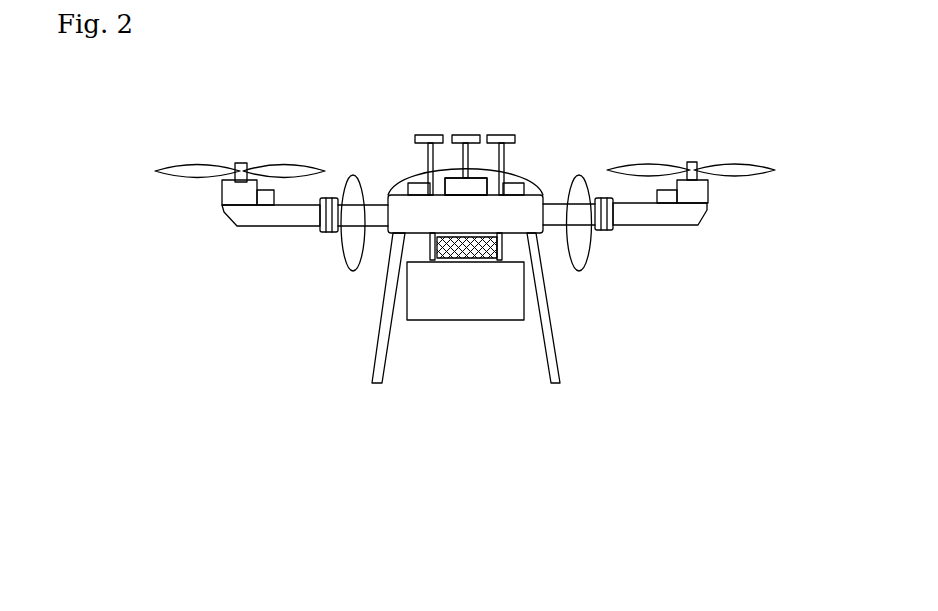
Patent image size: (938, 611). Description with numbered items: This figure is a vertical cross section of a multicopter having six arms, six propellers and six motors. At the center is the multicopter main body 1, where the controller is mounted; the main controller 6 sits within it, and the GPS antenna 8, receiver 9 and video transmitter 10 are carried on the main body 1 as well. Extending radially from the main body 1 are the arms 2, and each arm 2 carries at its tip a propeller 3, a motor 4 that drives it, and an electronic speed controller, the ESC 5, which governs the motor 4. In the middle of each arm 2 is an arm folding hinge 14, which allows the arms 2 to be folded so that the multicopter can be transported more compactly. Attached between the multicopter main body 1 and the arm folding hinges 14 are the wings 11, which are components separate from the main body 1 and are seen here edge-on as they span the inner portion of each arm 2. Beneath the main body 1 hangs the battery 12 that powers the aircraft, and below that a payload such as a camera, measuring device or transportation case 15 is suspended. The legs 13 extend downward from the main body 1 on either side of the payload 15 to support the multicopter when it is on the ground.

The multicopter main body 1 is at (545, 195).
The arm 2 is at (657, 226).
The propeller 3 is at (768, 165).
The motor 4 is at (708, 192).
The ESC 5 is at (667, 190).
The main controller 6 is at (443, 187).
The GPS antenna 8 is at (517, 137).
The receiver 9 is at (400, 183).
The video transmitter 10 is at (527, 185).
The wing 11 is at (588, 248).
The battery 12 is at (480, 255).
The leg 13 is at (550, 310).
The arm folding hinge 14 is at (610, 230).
The camera, measuring device, transportation case, etc. 15 is at (465, 320).